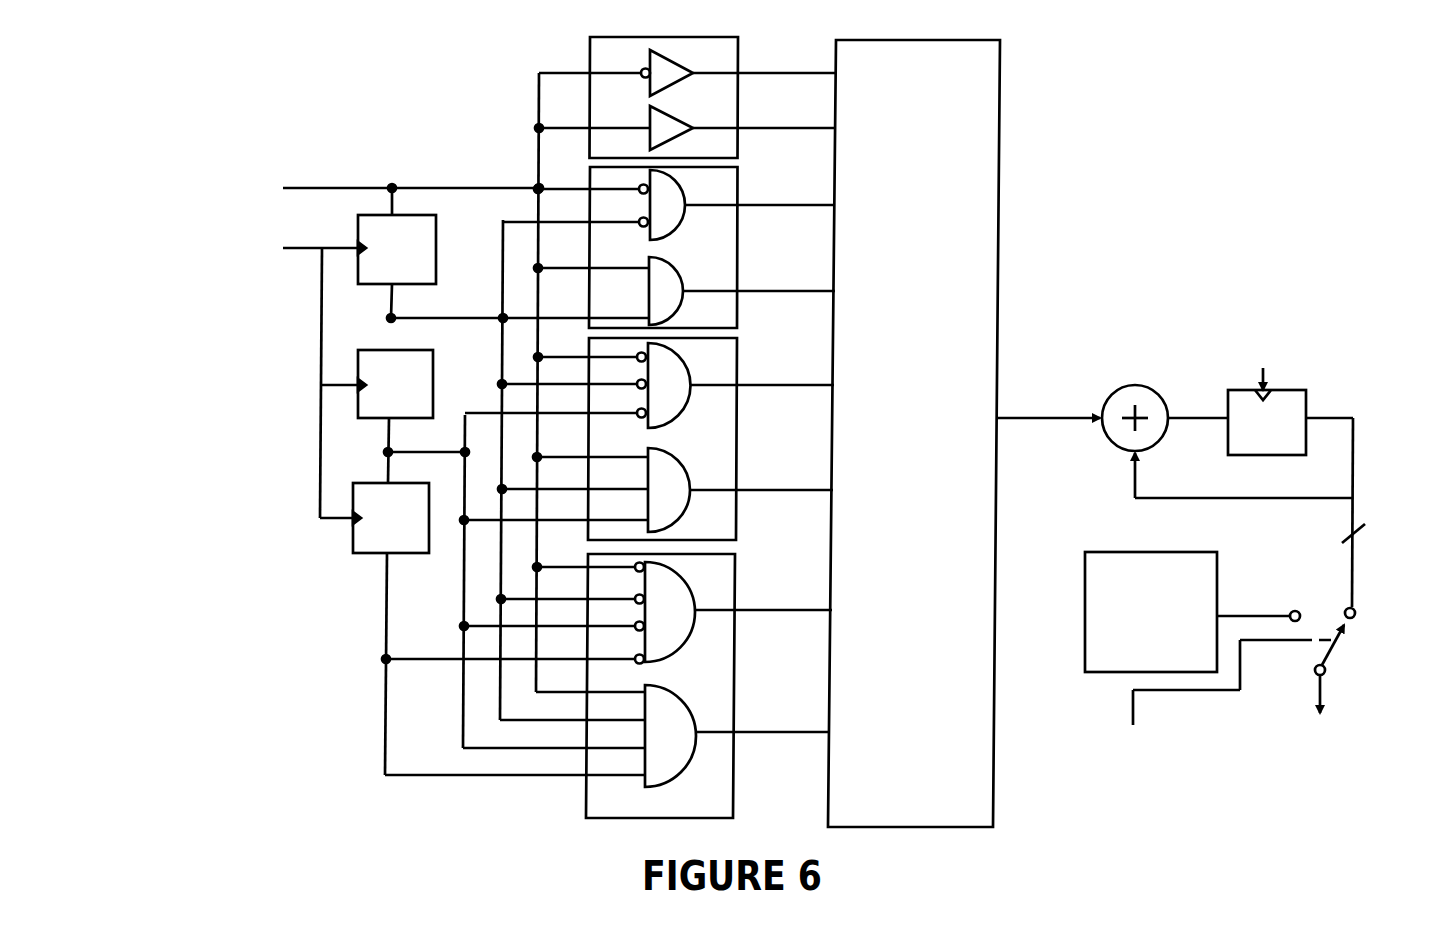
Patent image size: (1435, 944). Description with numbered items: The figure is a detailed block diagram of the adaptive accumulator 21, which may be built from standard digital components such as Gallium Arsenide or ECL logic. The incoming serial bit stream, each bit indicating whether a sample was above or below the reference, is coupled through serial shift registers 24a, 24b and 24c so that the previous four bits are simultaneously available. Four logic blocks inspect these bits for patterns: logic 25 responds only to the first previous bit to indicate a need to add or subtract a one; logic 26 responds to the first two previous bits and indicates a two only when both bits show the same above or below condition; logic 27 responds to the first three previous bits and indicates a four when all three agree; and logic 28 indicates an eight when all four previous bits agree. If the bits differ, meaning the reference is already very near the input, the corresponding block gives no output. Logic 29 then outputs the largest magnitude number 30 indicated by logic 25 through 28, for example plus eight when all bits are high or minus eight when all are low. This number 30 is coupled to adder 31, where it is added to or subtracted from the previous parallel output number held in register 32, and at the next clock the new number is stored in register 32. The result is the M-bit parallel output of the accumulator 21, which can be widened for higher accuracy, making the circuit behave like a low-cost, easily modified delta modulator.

The adaptive accumulator 21 is at (1416, 246).
The serial shift register 24a is at (352, 225).
The serial shift register 24b is at (365, 348).
The serial shift register 24c is at (364, 477).
The logic 25 is at (695, 112).
The logic 26 is at (697, 266).
The logic 27 is at (689, 450).
The logic 28 is at (689, 680).
The logic 29 is at (870, 459).
The largest magnitude number 30 is at (1090, 537).
The adder 31 is at (1133, 385).
The register 32 is at (1238, 460).